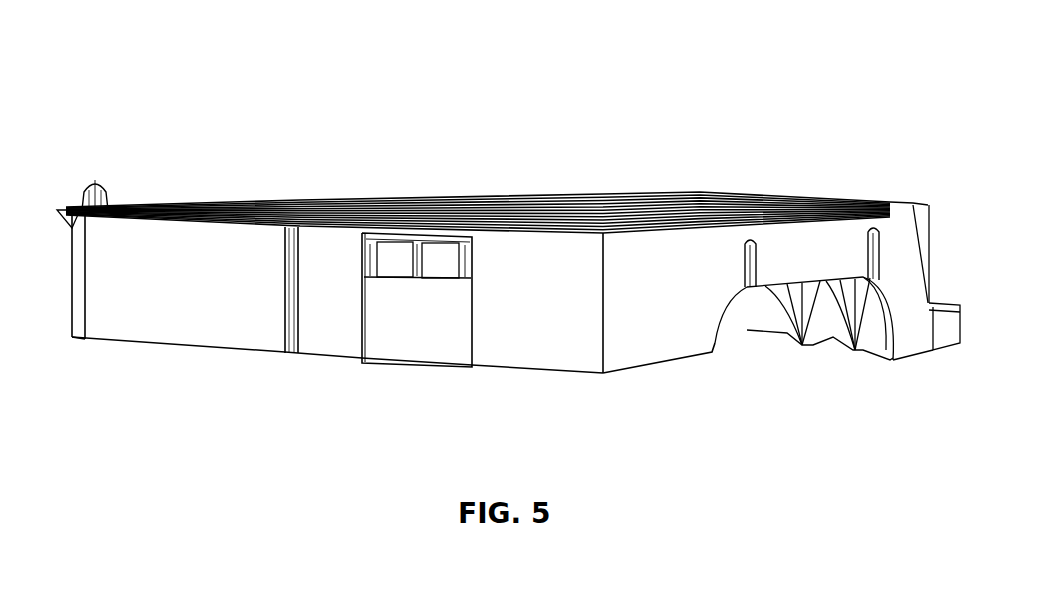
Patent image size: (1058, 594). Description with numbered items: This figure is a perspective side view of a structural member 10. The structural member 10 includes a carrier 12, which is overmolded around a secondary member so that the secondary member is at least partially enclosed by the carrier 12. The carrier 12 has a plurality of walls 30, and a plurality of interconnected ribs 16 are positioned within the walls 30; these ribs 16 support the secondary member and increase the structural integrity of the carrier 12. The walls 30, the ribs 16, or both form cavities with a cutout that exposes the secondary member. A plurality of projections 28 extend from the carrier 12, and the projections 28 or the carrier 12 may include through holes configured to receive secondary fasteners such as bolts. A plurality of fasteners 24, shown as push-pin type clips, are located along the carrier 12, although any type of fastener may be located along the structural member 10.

The structural member 10 is at (346, 131).
The carrier 12 is at (497, 282).
The interconnected ribs 16 is at (870, 328).
The fasteners 24 is at (96, 180).
The projections 28 is at (56, 237).
The walls 30 is at (212, 320).